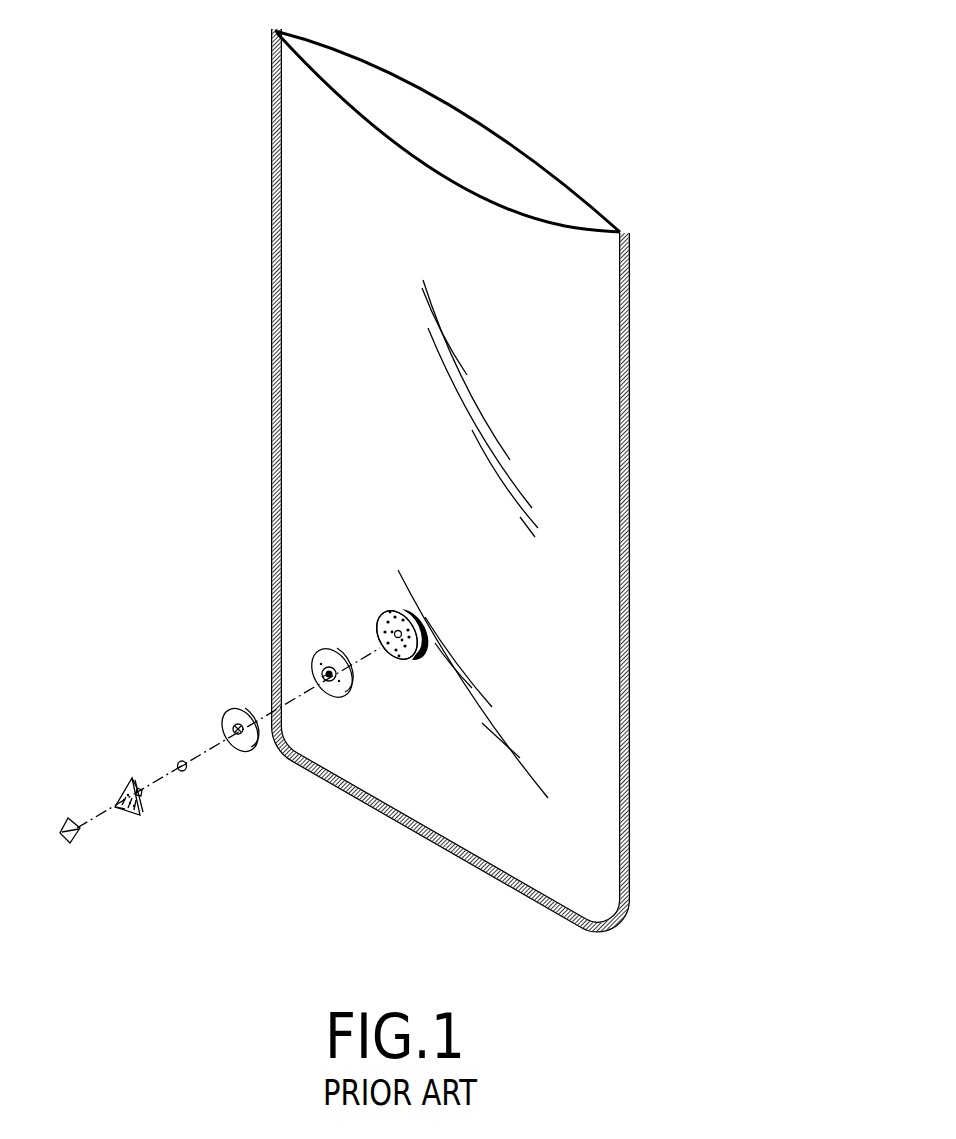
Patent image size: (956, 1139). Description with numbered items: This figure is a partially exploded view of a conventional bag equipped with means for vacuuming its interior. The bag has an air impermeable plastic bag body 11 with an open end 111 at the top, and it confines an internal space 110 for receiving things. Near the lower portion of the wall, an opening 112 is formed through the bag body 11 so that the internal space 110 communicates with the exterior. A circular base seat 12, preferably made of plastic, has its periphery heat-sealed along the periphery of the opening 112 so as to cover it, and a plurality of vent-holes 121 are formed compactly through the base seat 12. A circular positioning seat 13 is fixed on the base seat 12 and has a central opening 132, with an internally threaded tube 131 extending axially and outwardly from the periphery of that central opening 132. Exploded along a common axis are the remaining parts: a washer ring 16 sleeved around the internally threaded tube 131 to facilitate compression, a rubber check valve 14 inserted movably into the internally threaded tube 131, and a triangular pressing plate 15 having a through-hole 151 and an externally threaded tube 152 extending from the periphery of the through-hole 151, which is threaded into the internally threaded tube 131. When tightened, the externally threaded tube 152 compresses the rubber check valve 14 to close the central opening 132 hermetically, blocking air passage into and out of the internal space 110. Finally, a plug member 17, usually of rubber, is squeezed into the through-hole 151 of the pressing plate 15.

The plastic bag body 11 is at (628, 829).
The internal space 110 is at (605, 552).
The open end 111 is at (517, 175).
The opening 112 is at (392, 612).
The circular base seat 12 is at (407, 658).
The vent-holes 121 is at (410, 633).
The circular positioning seat 13 is at (343, 690).
The internally threaded tube 131 is at (332, 698).
The central opening 132 is at (332, 648).
The rubber check valve 14 is at (183, 770).
The triangular pressing plate 15 is at (140, 813).
The through-hole 151 is at (120, 810).
The externally threaded tube 152 is at (130, 780).
The washer ring 16 is at (247, 748).
The plug member 17 is at (70, 843).